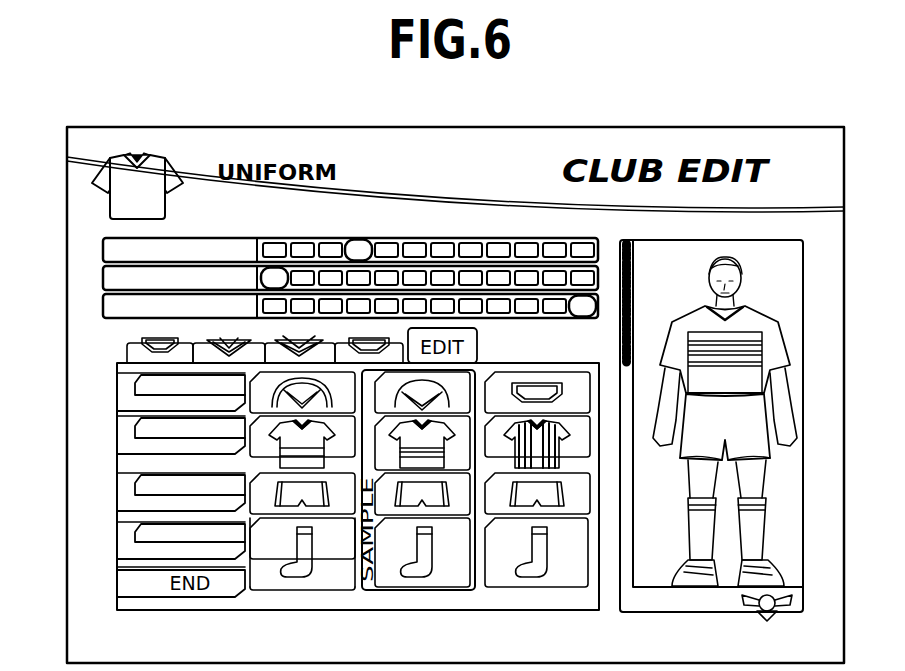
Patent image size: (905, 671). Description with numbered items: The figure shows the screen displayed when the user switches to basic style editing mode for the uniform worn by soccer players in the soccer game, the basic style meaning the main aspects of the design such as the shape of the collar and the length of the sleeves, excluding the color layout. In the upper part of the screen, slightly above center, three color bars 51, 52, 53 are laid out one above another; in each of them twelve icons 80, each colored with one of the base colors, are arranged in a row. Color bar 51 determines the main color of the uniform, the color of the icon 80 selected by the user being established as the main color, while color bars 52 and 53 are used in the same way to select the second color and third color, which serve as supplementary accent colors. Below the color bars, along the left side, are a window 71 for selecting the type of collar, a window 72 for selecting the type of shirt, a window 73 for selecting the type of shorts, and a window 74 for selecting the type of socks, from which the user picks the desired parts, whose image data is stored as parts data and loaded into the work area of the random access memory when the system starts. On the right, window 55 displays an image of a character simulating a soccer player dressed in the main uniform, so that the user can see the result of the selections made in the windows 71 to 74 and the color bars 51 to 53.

The color bar 51 is at (323, 245).
The color bar 52 is at (372, 275).
The color bar 53 is at (400, 302).
The icon 80 is at (525, 252).
The window for selecting the type of collar 71 is at (128, 397).
The window for selecting the type of shirt 72 is at (128, 435).
The window for selecting the type of shorts 73 is at (128, 490).
The window for selecting the type of socks 74 is at (128, 540).
The window 55 is at (788, 294).